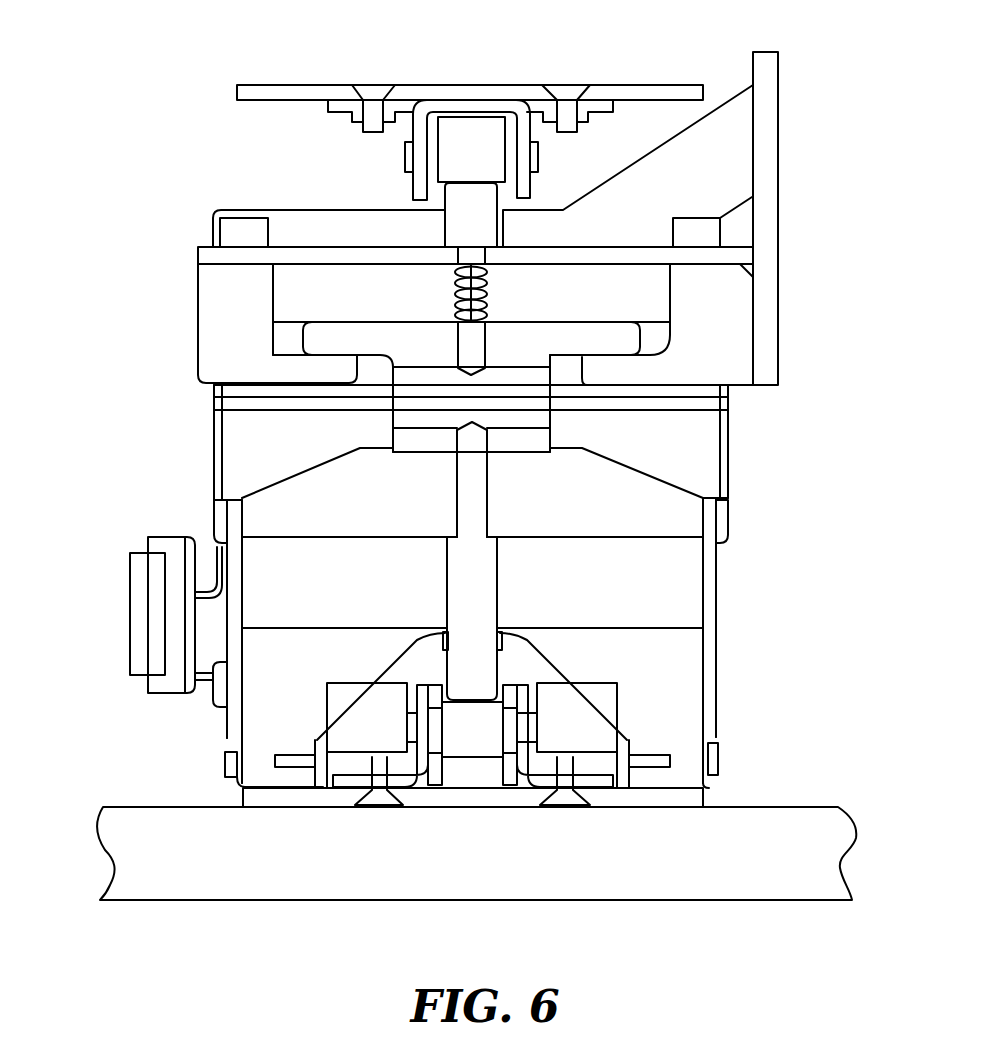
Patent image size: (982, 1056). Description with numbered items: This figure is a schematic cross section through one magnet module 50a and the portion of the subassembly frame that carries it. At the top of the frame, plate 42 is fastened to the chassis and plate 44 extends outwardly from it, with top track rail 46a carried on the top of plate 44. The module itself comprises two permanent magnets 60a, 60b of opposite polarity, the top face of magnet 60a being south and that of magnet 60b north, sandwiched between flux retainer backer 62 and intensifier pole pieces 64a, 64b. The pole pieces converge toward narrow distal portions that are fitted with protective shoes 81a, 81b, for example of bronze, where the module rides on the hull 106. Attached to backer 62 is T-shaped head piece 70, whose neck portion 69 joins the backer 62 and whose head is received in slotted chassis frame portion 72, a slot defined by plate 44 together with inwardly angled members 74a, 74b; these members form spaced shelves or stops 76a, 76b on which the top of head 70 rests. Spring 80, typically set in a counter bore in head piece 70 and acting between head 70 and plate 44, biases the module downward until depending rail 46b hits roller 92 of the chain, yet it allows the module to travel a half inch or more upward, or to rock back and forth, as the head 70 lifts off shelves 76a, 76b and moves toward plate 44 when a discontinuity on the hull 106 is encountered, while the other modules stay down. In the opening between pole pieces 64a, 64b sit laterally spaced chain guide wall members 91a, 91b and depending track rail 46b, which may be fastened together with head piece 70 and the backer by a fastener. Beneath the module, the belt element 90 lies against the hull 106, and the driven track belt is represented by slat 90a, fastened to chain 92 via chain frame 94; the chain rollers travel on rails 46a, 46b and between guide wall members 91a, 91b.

The plate 42 is at (773, 82).
The plate 44 is at (300, 246).
The top track rail 46a is at (462, 233).
The rail 46b is at (451, 593).
The magnet module 50a is at (128, 521).
The permanent magnet 60a is at (583, 593).
The permanent magnet 60b is at (328, 593).
The flux retainer backer 62 is at (340, 508).
The intensifier pole piece 64a is at (677, 703).
The intensifier pole piece 64b is at (268, 704).
The neck portion 69 is at (420, 417).
The T-shaped head piece 70 is at (597, 337).
The slotted chassis frame portion 72 is at (290, 296).
The inwardly angled member 74a is at (742, 345).
The inwardly angled member 74b is at (222, 359).
The shelf 76a is at (673, 338).
The shelf 76b is at (283, 348).
The spring 80 is at (488, 282).
The protective shoe 81a is at (713, 746).
The protective shoe 81b is at (233, 745).
The base plate 90 is at (240, 802).
The slat 90a is at (258, 84).
The chain guide wall member 91a is at (547, 730).
The chain guide wall member 91b is at (350, 730).
The chain 92 is at (458, 163).
The chain frame 94 is at (413, 110).
The hull 106 is at (160, 880).